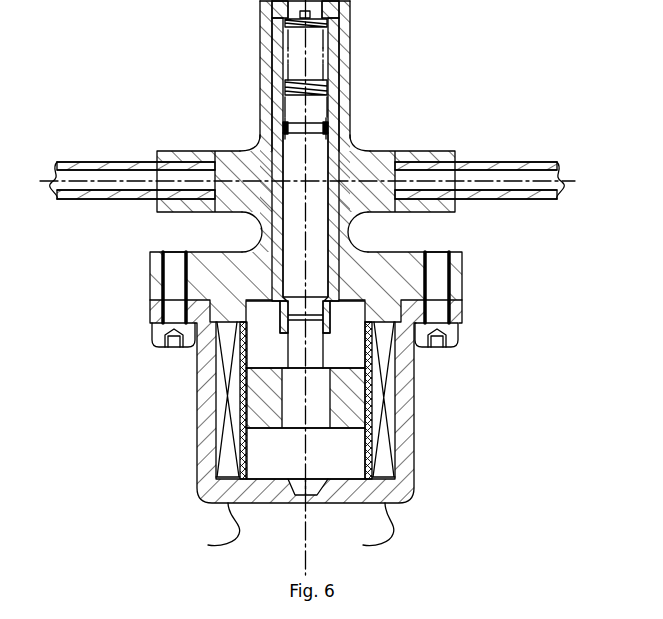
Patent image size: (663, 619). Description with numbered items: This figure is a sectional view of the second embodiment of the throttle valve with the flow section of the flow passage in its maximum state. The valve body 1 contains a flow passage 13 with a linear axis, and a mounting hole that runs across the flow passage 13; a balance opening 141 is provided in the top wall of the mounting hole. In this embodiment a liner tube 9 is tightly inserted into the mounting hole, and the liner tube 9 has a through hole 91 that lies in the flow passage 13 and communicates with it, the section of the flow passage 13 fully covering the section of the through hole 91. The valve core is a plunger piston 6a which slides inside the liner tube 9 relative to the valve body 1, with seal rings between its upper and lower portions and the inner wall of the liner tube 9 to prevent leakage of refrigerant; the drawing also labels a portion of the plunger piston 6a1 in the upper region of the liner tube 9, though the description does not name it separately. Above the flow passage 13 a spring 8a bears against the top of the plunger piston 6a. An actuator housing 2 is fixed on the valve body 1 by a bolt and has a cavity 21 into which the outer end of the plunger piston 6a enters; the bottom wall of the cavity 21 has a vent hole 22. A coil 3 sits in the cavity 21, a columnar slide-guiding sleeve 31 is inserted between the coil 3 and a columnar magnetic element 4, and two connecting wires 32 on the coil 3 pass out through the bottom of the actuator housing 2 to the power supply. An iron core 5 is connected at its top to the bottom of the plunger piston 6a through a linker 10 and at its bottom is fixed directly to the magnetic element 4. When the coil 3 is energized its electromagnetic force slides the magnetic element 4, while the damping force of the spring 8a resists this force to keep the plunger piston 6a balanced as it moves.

The balance opening 141 is at (298, 6).
The spring 8a is at (328, 24).
The valve body 1 is at (342, 58).
The liner tube 9 is at (335, 85).
The seal ring 6a1 is at (327, 128).
The plunger piston 6a is at (318, 210).
The flow passage 13 is at (190, 150).
The through hole 91 is at (253, 146).
The actuator housing 2 is at (158, 320).
The linker 10 is at (460, 322).
The coil 3 is at (385, 358).
The slide-guiding sleeve 31 is at (368, 432).
The magnetic element 4 is at (275, 395).
The iron core 5 is at (305, 340).
The cavity 21 is at (265, 452).
The vent hole 22 is at (313, 485).
The connecting wires 32 is at (237, 528).